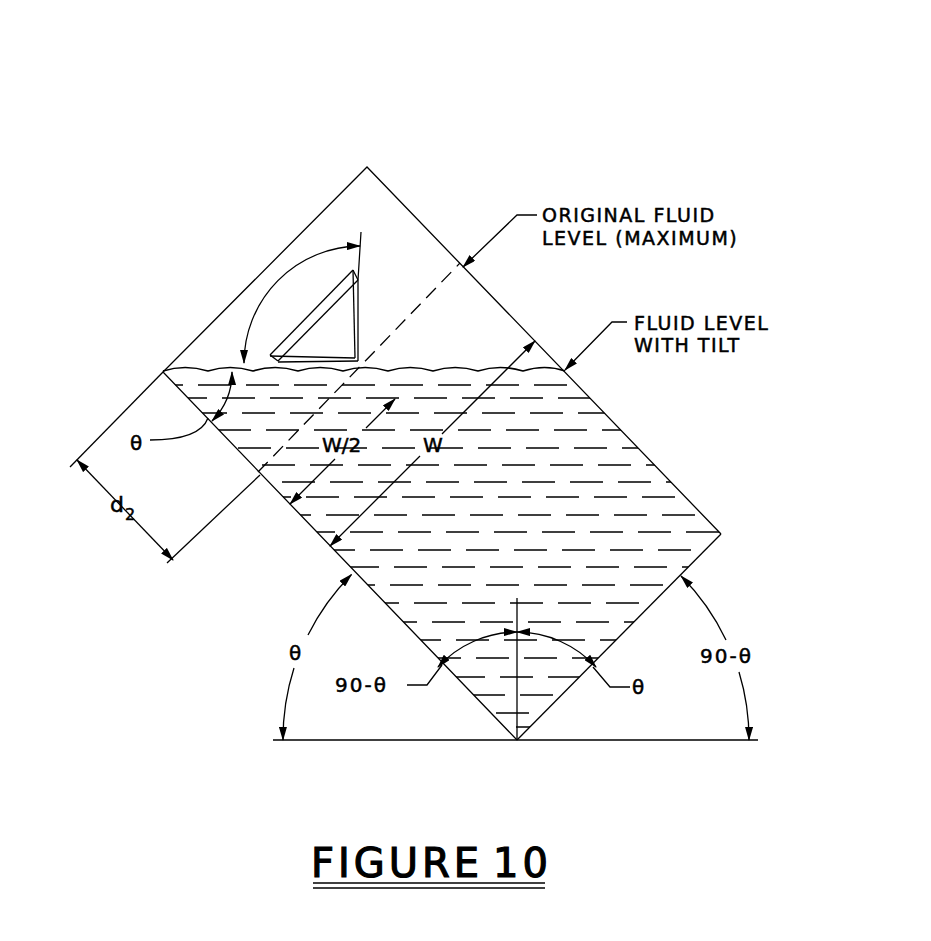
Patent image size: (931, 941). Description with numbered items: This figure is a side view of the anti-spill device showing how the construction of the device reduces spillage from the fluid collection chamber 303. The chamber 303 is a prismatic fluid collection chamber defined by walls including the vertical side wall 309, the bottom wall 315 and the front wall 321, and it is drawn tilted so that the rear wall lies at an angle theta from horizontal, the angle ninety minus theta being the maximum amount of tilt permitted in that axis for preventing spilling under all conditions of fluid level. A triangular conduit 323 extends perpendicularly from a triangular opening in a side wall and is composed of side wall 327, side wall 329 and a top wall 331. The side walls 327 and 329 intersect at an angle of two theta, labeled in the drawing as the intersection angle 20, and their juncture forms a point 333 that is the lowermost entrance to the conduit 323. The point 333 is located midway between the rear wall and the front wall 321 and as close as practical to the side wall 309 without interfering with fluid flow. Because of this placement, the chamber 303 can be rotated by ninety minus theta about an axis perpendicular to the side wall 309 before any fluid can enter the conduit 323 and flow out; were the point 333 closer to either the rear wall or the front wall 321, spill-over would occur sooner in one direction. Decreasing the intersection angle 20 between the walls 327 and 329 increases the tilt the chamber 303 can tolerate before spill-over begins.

The fluid collection chamber 303 is at (392, 115).
The front wall 321 is at (402, 198).
The triangular conduit 323 is at (319, 249).
The side wall of conduit 327 is at (205, 370).
The side wall of conduit 329 is at (362, 300).
The top wall of conduit 331 is at (288, 335).
The point 333 is at (368, 362).
The vertical side wall 309 is at (648, 477).
The bottom wall 315 is at (707, 550).
The tilt angle 20 is at (302, 297).